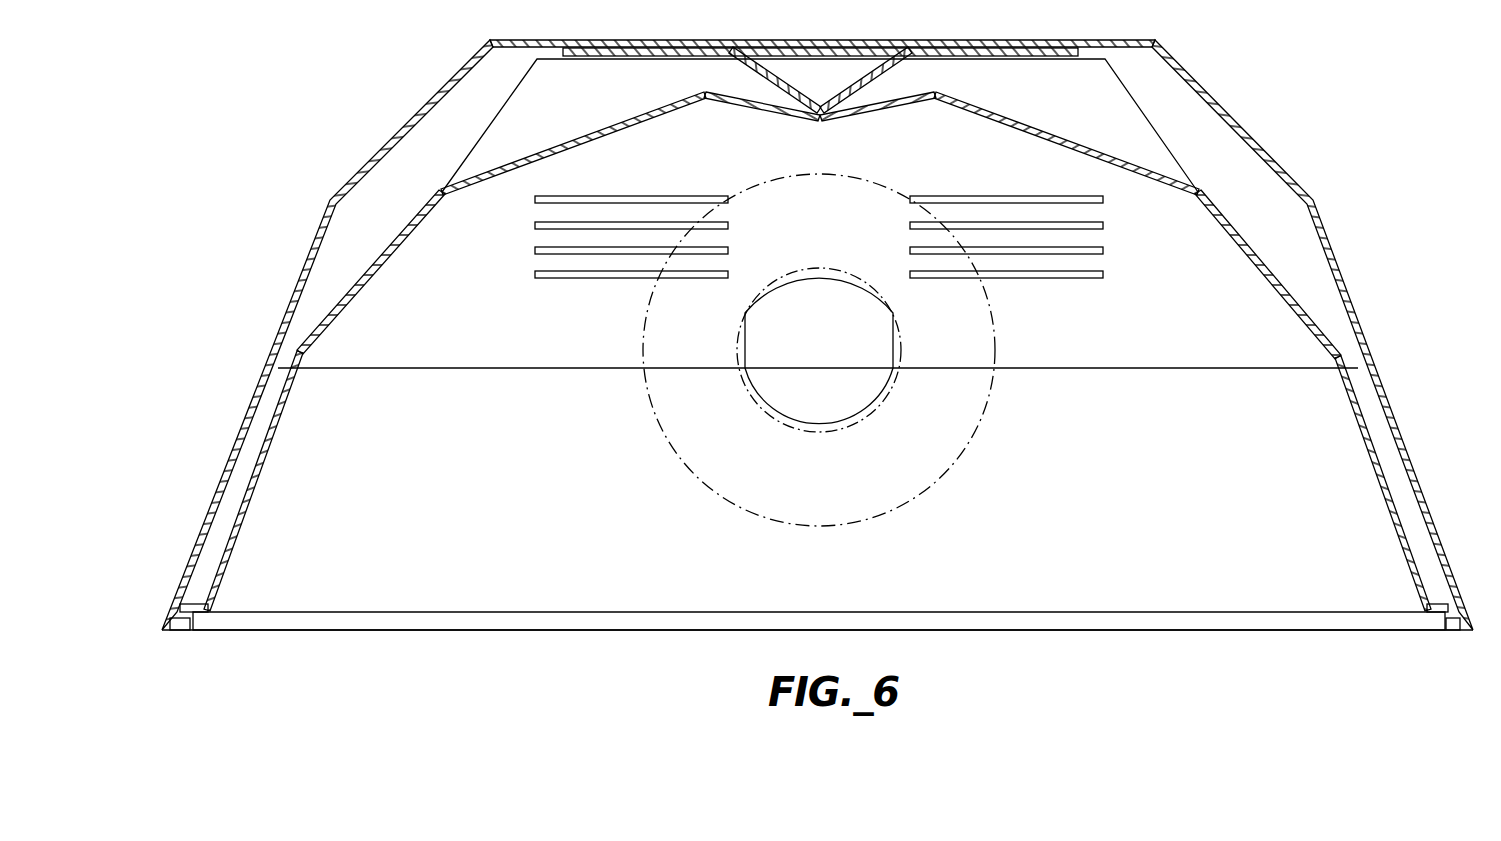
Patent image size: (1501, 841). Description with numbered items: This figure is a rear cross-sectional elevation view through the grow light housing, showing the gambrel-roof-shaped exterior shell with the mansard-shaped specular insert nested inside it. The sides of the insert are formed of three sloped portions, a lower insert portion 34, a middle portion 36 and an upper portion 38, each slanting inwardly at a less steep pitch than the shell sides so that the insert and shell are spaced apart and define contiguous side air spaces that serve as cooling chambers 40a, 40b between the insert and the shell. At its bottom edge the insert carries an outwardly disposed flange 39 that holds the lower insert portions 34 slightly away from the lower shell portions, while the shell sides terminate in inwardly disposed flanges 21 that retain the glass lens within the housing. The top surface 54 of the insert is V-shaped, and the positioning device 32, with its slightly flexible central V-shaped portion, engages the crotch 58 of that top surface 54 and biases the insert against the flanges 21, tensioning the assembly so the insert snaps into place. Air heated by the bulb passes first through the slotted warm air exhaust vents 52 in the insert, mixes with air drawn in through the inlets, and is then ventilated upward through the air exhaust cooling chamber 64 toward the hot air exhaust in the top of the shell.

The inwardly disposed flange 21 is at (179, 631).
The positioning device 32 is at (768, 60).
The lower insert portion 34 is at (259, 481).
The middle sloped insert portion 36 is at (412, 229).
The upper sloped insert portion 38 is at (618, 131).
The outwardly disposed flange 39 is at (193, 631).
The cooling chamber 40a is at (392, 184).
The cooling chamber 40b is at (1250, 178).
The slotted warm air exhaust vents 52 is at (589, 279).
The top surface 54 is at (721, 97).
The crotch 58 is at (823, 121).
The air exhaust cooling chamber 64 is at (822, 78).